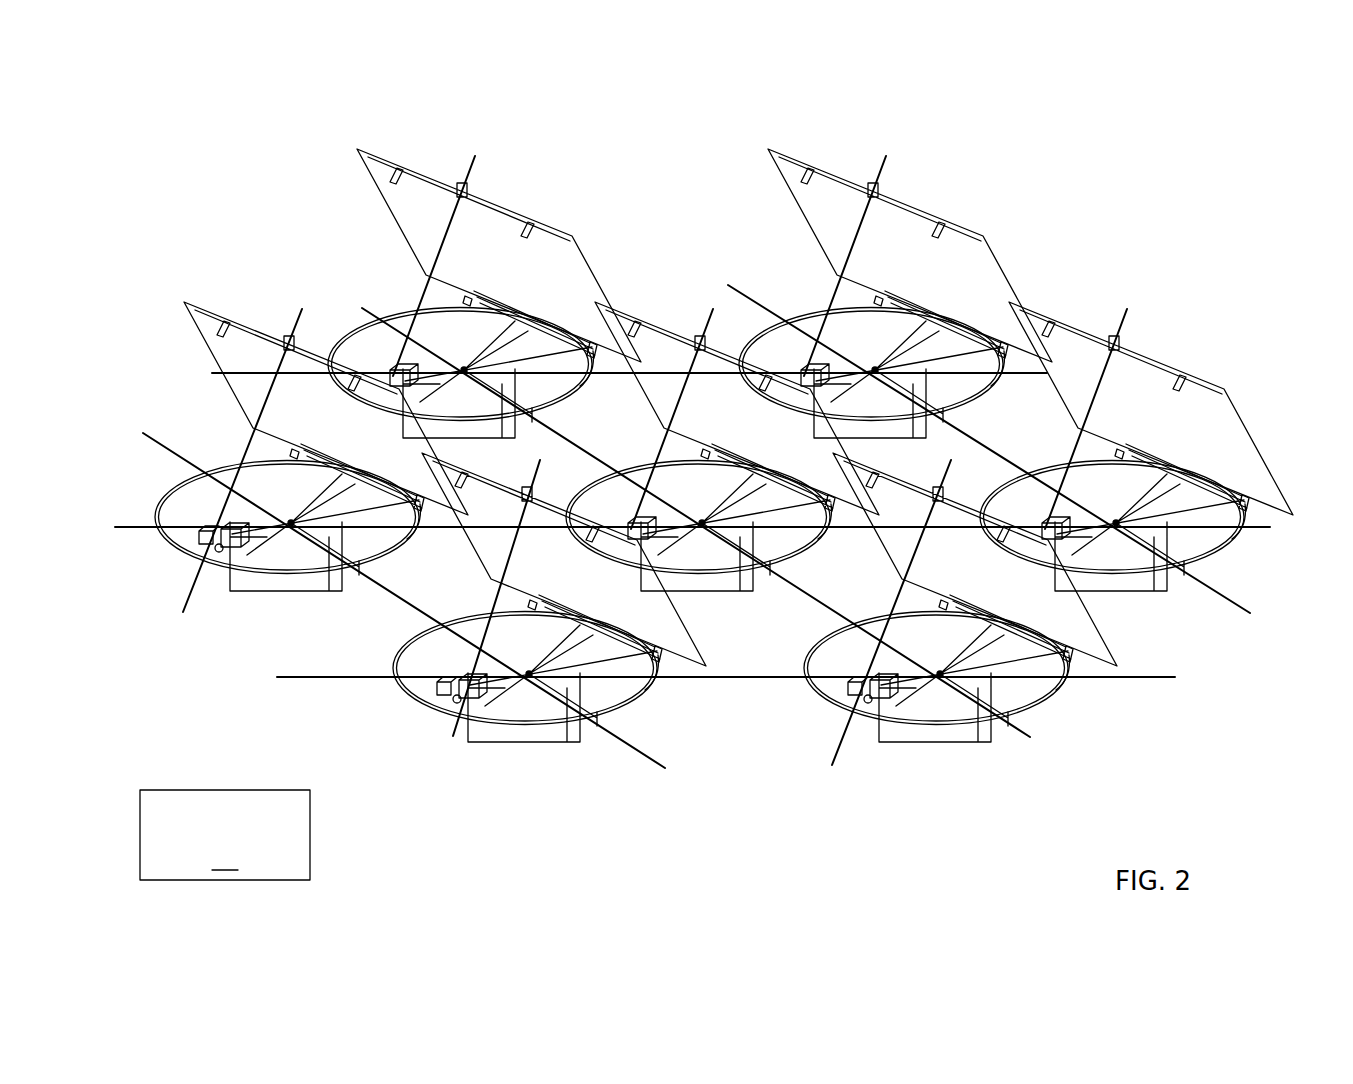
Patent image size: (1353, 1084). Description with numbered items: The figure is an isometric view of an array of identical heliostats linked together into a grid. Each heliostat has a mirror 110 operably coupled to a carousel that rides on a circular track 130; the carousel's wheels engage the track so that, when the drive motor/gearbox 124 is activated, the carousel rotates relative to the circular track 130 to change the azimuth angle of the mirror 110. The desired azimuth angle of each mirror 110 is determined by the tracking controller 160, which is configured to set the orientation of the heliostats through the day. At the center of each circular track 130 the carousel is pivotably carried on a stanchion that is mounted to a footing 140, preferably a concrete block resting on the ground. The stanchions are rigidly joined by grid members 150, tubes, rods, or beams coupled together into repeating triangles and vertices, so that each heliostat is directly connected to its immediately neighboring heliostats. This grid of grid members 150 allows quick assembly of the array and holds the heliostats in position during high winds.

The mirror 110 is at (400, 204).
The circular track 130 is at (398, 312).
The grid members 150 is at (190, 613).
The footing 140 is at (1113, 590).
The drive motor/gearbox 124 is at (853, 690).
The tracking controller 160 is at (225, 835).